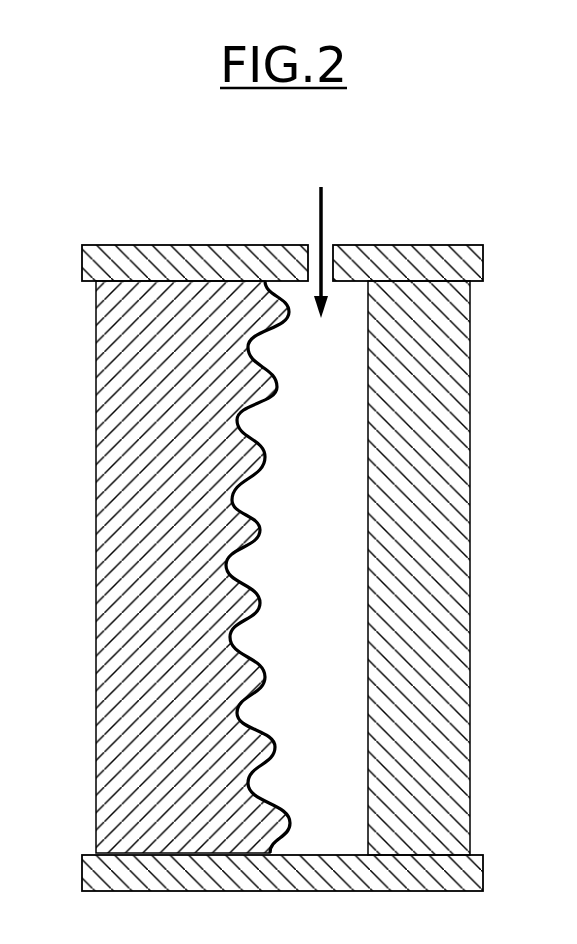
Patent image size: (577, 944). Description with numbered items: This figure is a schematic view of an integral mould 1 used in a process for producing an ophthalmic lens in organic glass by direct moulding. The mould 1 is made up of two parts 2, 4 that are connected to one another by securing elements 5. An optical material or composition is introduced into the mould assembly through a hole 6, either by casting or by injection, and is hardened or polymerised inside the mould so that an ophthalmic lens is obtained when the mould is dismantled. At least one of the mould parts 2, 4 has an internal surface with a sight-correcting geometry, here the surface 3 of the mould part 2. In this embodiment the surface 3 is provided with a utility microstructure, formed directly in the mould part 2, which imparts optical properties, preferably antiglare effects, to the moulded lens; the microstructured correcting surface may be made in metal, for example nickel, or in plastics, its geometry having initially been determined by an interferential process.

The mould 1 is at (90, 233).
The mould part 2 is at (160, 482).
The internal surface 3 is at (240, 547).
The mould part 4 is at (422, 475).
The securing elements 5 is at (120, 263).
The hole 6 is at (312, 258).